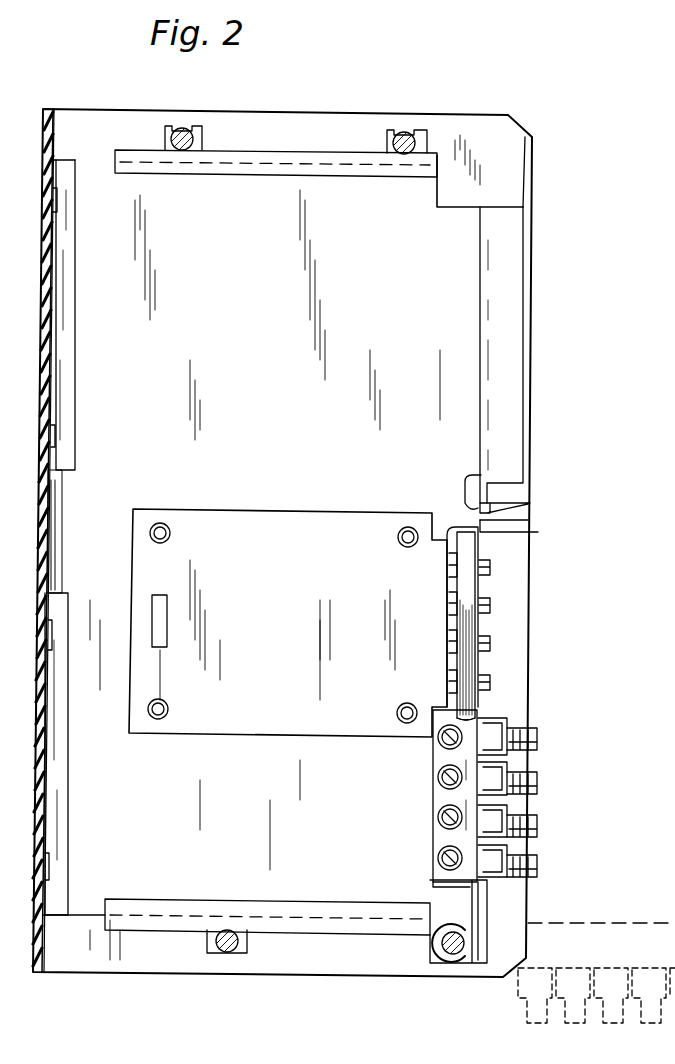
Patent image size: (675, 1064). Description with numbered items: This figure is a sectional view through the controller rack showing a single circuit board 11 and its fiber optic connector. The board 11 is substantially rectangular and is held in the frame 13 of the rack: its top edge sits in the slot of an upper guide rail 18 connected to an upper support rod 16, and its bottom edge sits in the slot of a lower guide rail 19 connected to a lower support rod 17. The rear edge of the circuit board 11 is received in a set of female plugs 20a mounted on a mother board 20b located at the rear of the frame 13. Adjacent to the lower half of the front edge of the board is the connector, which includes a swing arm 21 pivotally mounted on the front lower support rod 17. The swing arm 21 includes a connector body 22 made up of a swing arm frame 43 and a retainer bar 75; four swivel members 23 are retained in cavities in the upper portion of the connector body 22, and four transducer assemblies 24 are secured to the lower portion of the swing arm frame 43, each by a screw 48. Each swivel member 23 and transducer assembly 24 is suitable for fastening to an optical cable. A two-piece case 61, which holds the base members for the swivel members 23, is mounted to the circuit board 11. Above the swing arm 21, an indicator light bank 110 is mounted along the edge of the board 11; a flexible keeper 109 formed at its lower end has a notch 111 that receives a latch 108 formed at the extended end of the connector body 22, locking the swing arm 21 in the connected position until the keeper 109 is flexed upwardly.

The circuit board 11 is at (289, 333).
The frame 13 is at (493, 128).
The upper support rod 16 is at (184, 128).
The lower support rod 17 is at (226, 930).
The upper guide rail 18 is at (290, 152).
The lower guide rail 19 is at (315, 932).
The female plug 20a is at (75, 300).
The mother board 20b is at (50, 497).
The swing arm 21 is at (430, 780).
The connector body 22 is at (430, 748).
The swivel member 23 is at (484, 640).
The transducer assembly 24 is at (512, 758).
The swing arm frame 43 is at (438, 858).
The screw 48 is at (438, 820).
The case 61 is at (268, 509).
The retainer bar 75 is at (470, 707).
The latch 108 is at (535, 533).
The flexible keeper 109 is at (510, 504).
The indicator light bank 110 is at (522, 368).
The notch 111 is at (466, 512).